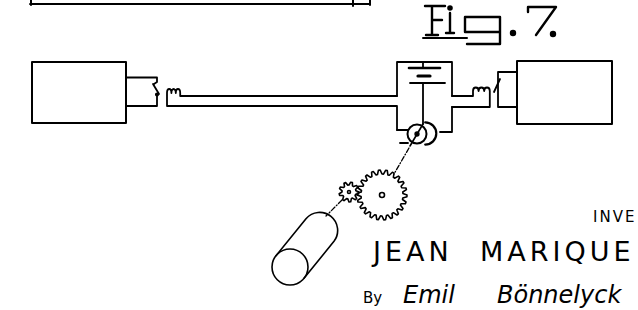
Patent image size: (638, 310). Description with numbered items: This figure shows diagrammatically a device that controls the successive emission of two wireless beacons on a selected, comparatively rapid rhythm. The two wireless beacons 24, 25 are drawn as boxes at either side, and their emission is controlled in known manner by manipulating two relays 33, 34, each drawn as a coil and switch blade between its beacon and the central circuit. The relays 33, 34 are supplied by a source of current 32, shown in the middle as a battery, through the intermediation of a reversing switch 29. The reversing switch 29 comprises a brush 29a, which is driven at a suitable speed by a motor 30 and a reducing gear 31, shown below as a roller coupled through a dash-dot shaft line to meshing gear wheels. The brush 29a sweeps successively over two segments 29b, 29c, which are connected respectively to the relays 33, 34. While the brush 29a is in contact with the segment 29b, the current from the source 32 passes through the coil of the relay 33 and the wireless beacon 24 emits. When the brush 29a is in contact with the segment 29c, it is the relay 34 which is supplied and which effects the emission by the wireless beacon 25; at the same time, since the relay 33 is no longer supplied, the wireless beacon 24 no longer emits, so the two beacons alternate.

The wireless beacon 24 is at (94, 92).
The wireless beacon 25 is at (555, 92).
The reversing switch 29 is at (423, 149).
The brush 29a is at (407, 128).
The segment 29b is at (408, 143).
The segment 29c is at (446, 141).
The motor 30 is at (304, 231).
The reducing gear 31 is at (348, 182).
The source of current 32 is at (434, 78).
The relay 33 is at (162, 83).
The relay 34 is at (498, 81).